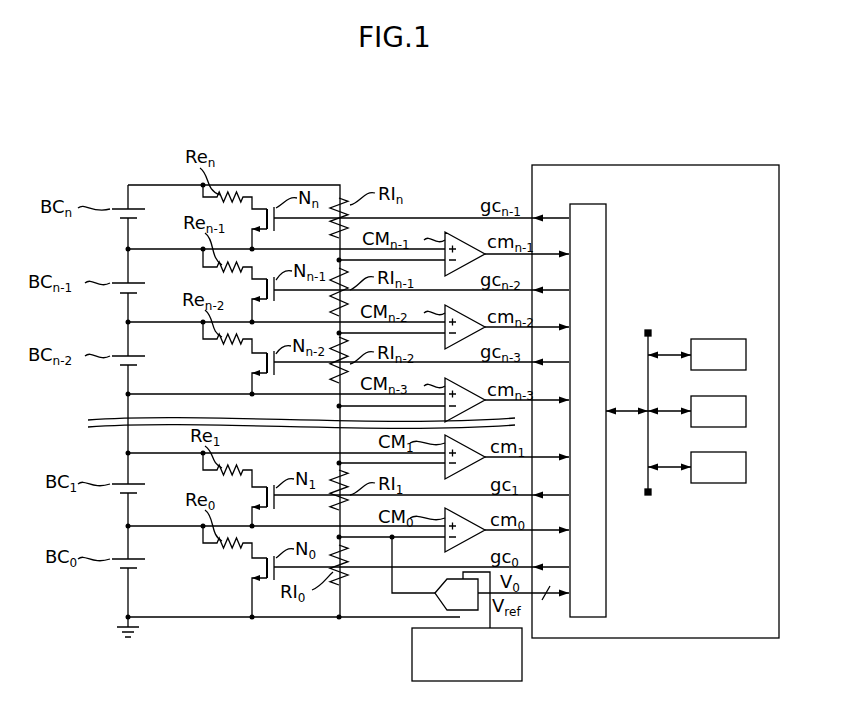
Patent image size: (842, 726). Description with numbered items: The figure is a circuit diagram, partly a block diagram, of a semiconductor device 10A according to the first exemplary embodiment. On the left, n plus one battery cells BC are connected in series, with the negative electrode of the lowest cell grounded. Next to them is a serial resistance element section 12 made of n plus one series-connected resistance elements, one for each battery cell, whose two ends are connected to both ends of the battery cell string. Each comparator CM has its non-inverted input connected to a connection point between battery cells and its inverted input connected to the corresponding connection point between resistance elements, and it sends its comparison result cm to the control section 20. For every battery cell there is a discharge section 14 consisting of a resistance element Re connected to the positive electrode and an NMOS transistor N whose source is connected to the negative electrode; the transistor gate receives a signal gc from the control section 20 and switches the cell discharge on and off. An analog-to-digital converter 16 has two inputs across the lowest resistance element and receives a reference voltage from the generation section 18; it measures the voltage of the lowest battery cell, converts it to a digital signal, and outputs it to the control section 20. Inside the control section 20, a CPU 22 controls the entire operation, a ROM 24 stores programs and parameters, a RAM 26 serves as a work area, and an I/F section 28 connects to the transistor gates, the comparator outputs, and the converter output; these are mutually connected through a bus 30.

The semiconductor device 10A is at (664, 146).
The serial resistance element section 12 is at (369, 175).
The discharge section 14 is at (288, 387).
The analog-to-digital converter (ADC) 16 is at (435, 597).
The generation section 18 is at (412, 655).
The control section 20 is at (713, 165).
The central processing section (CPU) 22 is at (718, 339).
The read only memory (ROM) 24 is at (718, 396).
The random access memory (RAM) 26 is at (718, 452).
The interface (I/F) section 28 is at (606, 270).
The bus 30 is at (650, 350).